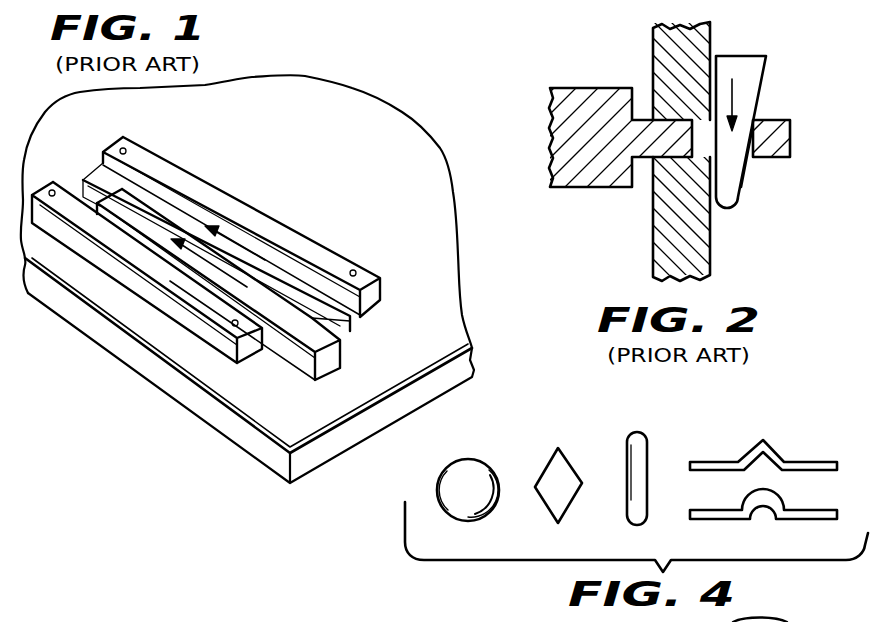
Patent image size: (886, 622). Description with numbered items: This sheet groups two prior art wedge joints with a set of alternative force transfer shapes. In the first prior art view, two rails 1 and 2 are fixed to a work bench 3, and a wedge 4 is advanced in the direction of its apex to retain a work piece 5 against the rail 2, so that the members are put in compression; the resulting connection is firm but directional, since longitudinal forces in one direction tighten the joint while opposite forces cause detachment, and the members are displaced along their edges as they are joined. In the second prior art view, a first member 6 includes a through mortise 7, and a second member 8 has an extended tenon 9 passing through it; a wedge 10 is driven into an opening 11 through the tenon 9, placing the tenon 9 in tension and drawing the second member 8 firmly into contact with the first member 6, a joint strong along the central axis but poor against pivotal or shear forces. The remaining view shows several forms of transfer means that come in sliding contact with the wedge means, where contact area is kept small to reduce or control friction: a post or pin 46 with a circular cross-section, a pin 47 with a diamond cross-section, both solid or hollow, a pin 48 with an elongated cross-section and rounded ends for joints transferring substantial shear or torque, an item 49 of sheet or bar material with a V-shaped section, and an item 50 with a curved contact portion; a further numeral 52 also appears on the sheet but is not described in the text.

In FIG. 1, the rail 1 is at (340, 262).
In FIG. 1, the rail 2 is at (252, 348).
In FIG. 1, the work bench 3 is at (352, 204).
In FIG. 1, the wedge 4 is at (334, 311).
In FIG. 1, the work piece 5 is at (327, 366).
In FIG. 2, the first member 6 is at (708, 30).
In FIG. 2, the through mortise 7 is at (652, 168).
In FIG. 2, the second member 8 is at (608, 107).
In FIG. 2, the extended tenon 9 is at (793, 131).
In FIG. 2, the wedge 10 is at (767, 80).
In FIG. 2, the opening 11 is at (748, 158).
In FIG. 4, the post or pin 46 is at (475, 482).
In FIG. 4, the pin 47 is at (565, 472).
In FIG. 4, the pin 48 is at (656, 412).
In FIG. 4, the item 49 is at (773, 448).
In FIG. 4, the item 50 is at (782, 494).
In FIG. 4, the element 52 is at (784, 610).